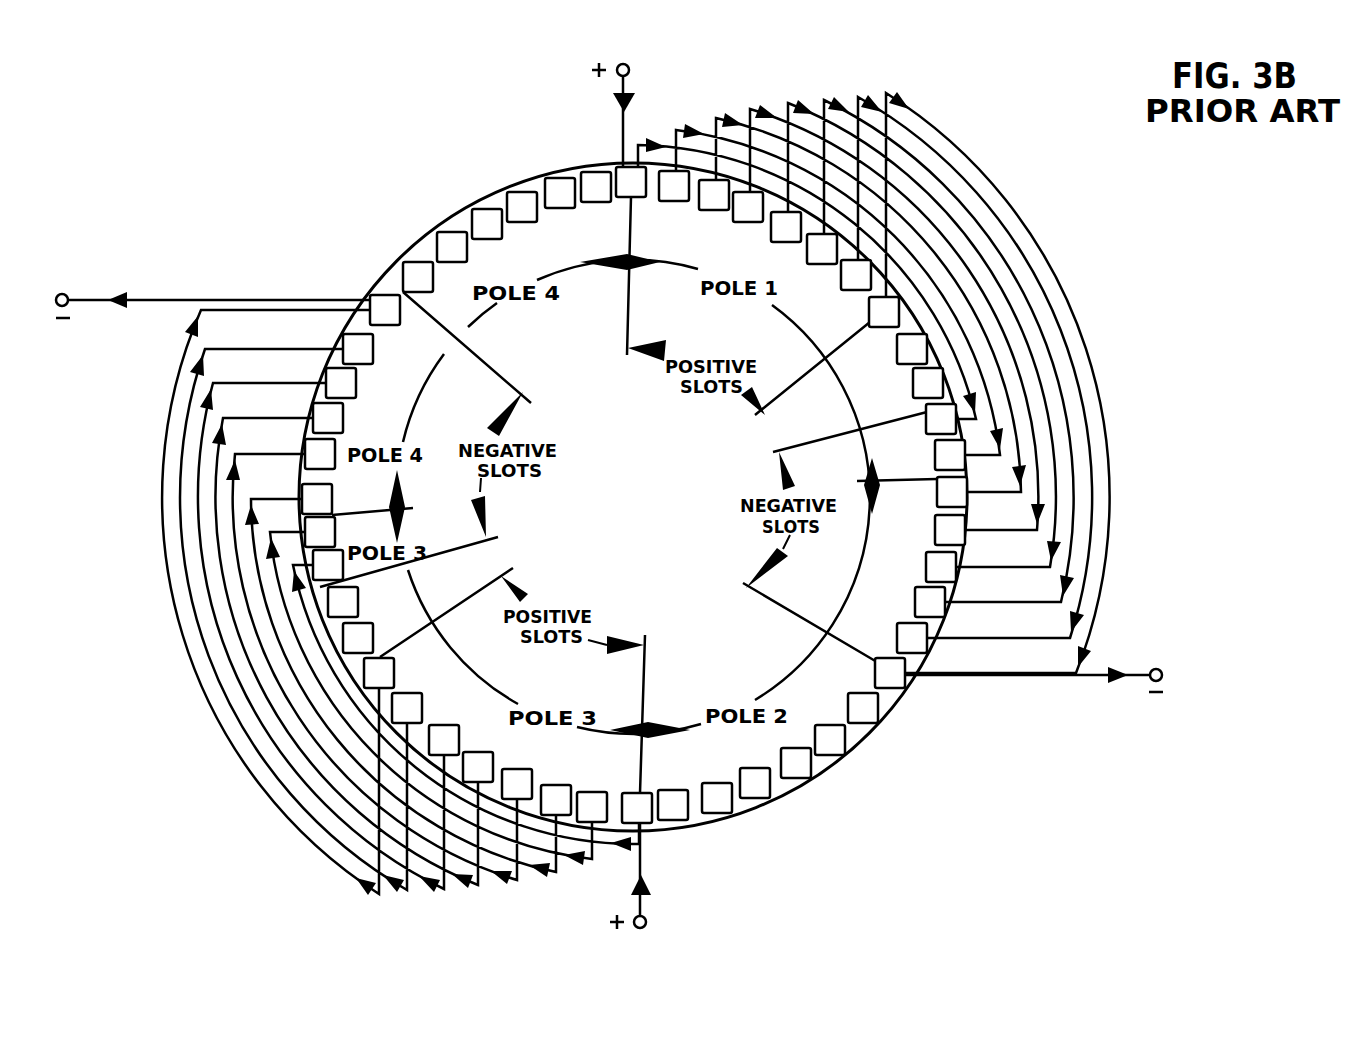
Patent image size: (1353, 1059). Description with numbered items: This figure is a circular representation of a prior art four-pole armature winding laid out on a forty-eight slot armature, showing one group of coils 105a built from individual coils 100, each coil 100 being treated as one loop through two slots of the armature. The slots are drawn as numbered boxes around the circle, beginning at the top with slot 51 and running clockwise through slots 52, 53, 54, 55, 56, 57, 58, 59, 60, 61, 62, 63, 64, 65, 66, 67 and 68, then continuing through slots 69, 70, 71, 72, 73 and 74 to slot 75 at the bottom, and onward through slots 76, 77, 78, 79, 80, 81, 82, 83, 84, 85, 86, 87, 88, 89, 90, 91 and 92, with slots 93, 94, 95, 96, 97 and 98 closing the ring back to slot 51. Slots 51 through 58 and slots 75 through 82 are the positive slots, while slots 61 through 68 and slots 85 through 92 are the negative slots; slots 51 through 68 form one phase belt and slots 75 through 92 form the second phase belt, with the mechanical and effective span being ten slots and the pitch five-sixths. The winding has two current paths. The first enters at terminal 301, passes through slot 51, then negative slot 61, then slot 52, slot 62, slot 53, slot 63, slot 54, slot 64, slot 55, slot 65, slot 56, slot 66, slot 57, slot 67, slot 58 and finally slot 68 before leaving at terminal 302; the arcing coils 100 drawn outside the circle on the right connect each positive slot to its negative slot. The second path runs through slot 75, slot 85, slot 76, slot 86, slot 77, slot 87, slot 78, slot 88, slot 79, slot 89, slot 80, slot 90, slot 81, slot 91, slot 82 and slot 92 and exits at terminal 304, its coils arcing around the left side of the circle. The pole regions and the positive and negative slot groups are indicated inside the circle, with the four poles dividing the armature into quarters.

The group of coils 105a is at (1012, 186).
The coil 100 is at (1030, 236).
The current path terminal 301 is at (637, 73).
The current path terminal 302 is at (1143, 666).
The current path terminal 304 is at (102, 284).
The positive slot 51 is at (631, 182).
The positive slot 52 is at (674, 186).
The positive slot 53 is at (714, 195).
The positive slot 54 is at (748, 207).
The positive slot 55 is at (786, 227).
The positive slot 56 is at (822, 249).
The positive slot 57 is at (856, 275).
The positive slot 58 is at (884, 312).
The armature slot 59 is at (912, 349).
The armature slot 60 is at (928, 383).
The negative slot 61 is at (941, 419).
The negative slot 62 is at (950, 455).
The negative slot 63 is at (952, 492).
The negative slot 64 is at (950, 530).
The negative slot 65 is at (941, 567).
The negative slot 66 is at (930, 602).
The negative slot 67 is at (912, 638).
The negative slot 68 is at (890, 673).
The armature slot 69 is at (863, 708).
The armature slot 70 is at (830, 740).
The armature slot 71 is at (796, 763).
The armature slot 72 is at (755, 783).
The armature slot 73 is at (717, 798).
The armature slot 74 is at (673, 805).
The positive slot 75 is at (637, 808).
The positive slot 76 is at (592, 807).
The positive slot 77 is at (556, 800).
The positive slot 78 is at (517, 784).
The positive slot 79 is at (478, 767).
The positive slot 80 is at (444, 740).
The positive slot 81 is at (407, 708).
The positive slot 82 is at (379, 673).
The armature slot 83 is at (358, 638).
The armature slot 84 is at (343, 602).
The negative slot 85 is at (328, 565).
The negative slot 86 is at (320, 532).
The negative slot 87 is at (317, 499).
The negative slot 88 is at (320, 454).
The negative slot 89 is at (328, 418).
The negative slot 90 is at (341, 383).
The negative slot 91 is at (358, 349).
The negative slot 92 is at (385, 310).
The armature slot 93 is at (418, 277).
The armature slot 94 is at (452, 247).
The armature slot 95 is at (487, 224).
The armature slot 96 is at (522, 207).
The armature slot 97 is at (560, 193).
The armature slot 98 is at (596, 187).